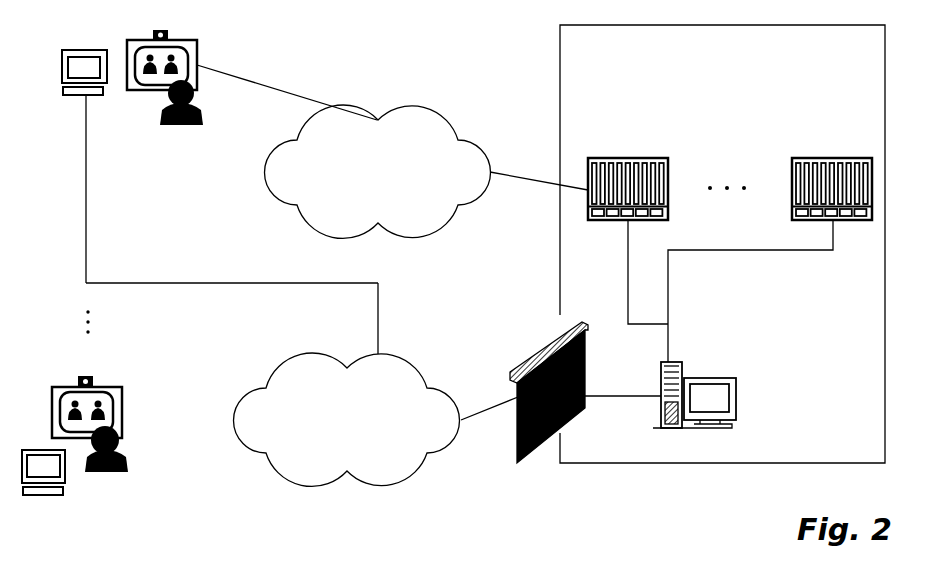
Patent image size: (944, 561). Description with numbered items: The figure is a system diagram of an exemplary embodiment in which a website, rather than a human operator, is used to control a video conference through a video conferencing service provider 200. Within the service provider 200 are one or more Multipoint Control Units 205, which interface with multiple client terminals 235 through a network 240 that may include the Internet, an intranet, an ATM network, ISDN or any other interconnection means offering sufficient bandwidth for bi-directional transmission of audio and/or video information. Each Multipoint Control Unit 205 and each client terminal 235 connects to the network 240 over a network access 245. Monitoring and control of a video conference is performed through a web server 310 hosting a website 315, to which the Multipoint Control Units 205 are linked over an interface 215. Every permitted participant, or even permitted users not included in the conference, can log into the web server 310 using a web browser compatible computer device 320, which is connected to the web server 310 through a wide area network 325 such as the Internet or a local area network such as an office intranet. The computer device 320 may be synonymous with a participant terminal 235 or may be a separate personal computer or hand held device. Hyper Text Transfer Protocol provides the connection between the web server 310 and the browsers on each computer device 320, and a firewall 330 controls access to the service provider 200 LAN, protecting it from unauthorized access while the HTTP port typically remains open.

The service provider 200 is at (603, 75).
The Multipoint Control Unit 205 is at (622, 158).
The MCU/operator-console interface 215 is at (670, 279).
The client terminal 235 is at (197, 50).
The network 240 is at (433, 108).
The network access 245 is at (287, 90).
The web server 310 is at (714, 376).
The website 315 is at (660, 398).
The web browser compatible computer device 320 is at (71, 50).
The wide area network 325 is at (432, 357).
The firewall 330 is at (544, 351).